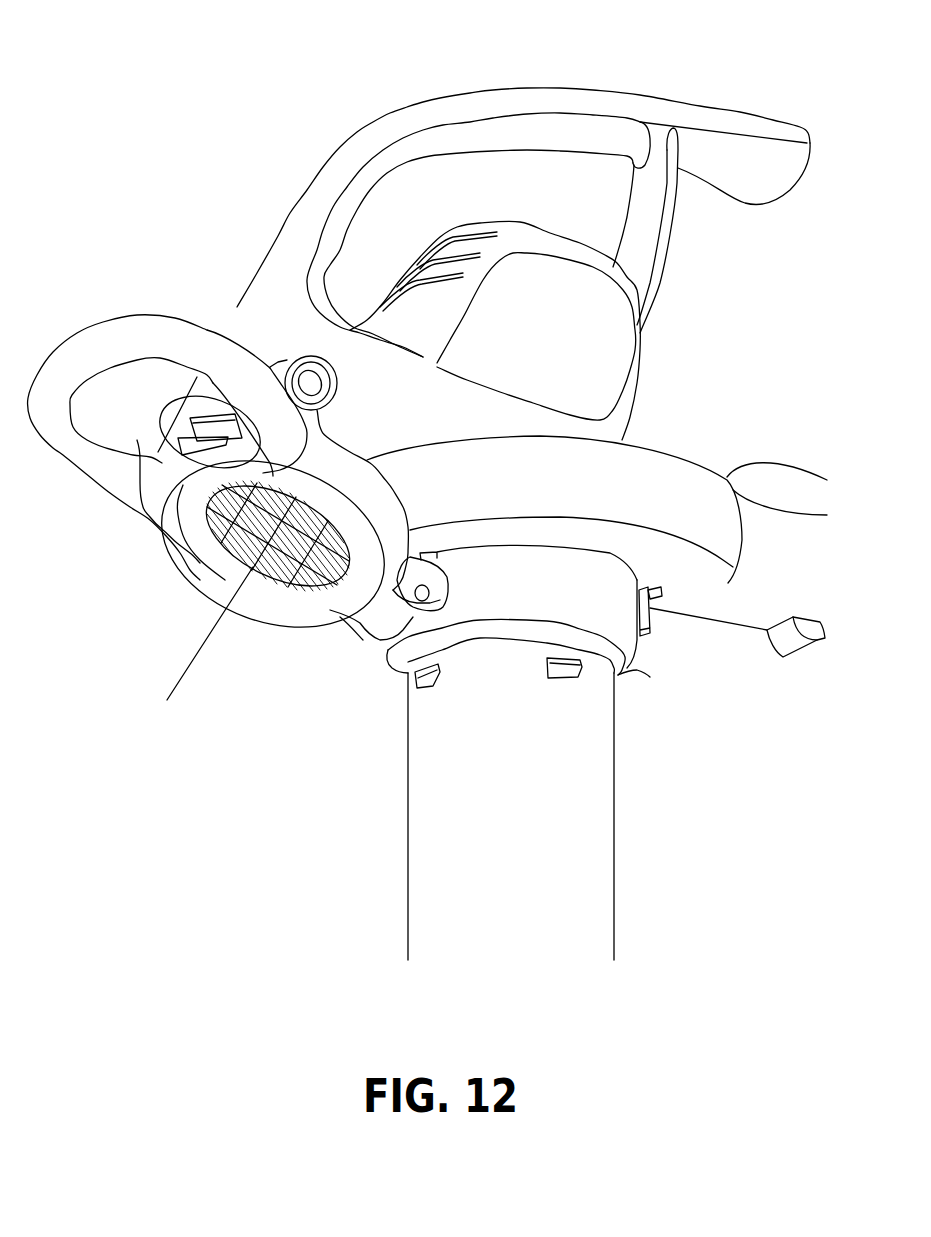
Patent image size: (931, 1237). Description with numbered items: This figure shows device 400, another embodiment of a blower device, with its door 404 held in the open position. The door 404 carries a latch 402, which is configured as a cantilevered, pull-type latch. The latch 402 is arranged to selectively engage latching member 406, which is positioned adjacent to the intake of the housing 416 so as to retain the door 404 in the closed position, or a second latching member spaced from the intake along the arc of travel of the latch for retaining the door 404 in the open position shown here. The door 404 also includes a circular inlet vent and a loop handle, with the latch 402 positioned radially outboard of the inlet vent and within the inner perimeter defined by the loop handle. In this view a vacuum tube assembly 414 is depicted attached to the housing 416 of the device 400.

The device 400 is at (257, 62).
The latch 402 is at (210, 400).
The door 404 is at (255, 537).
The latching member 406 is at (648, 622).
The vacuum tube assembly 414 is at (615, 673).
The housing 416 is at (662, 462).